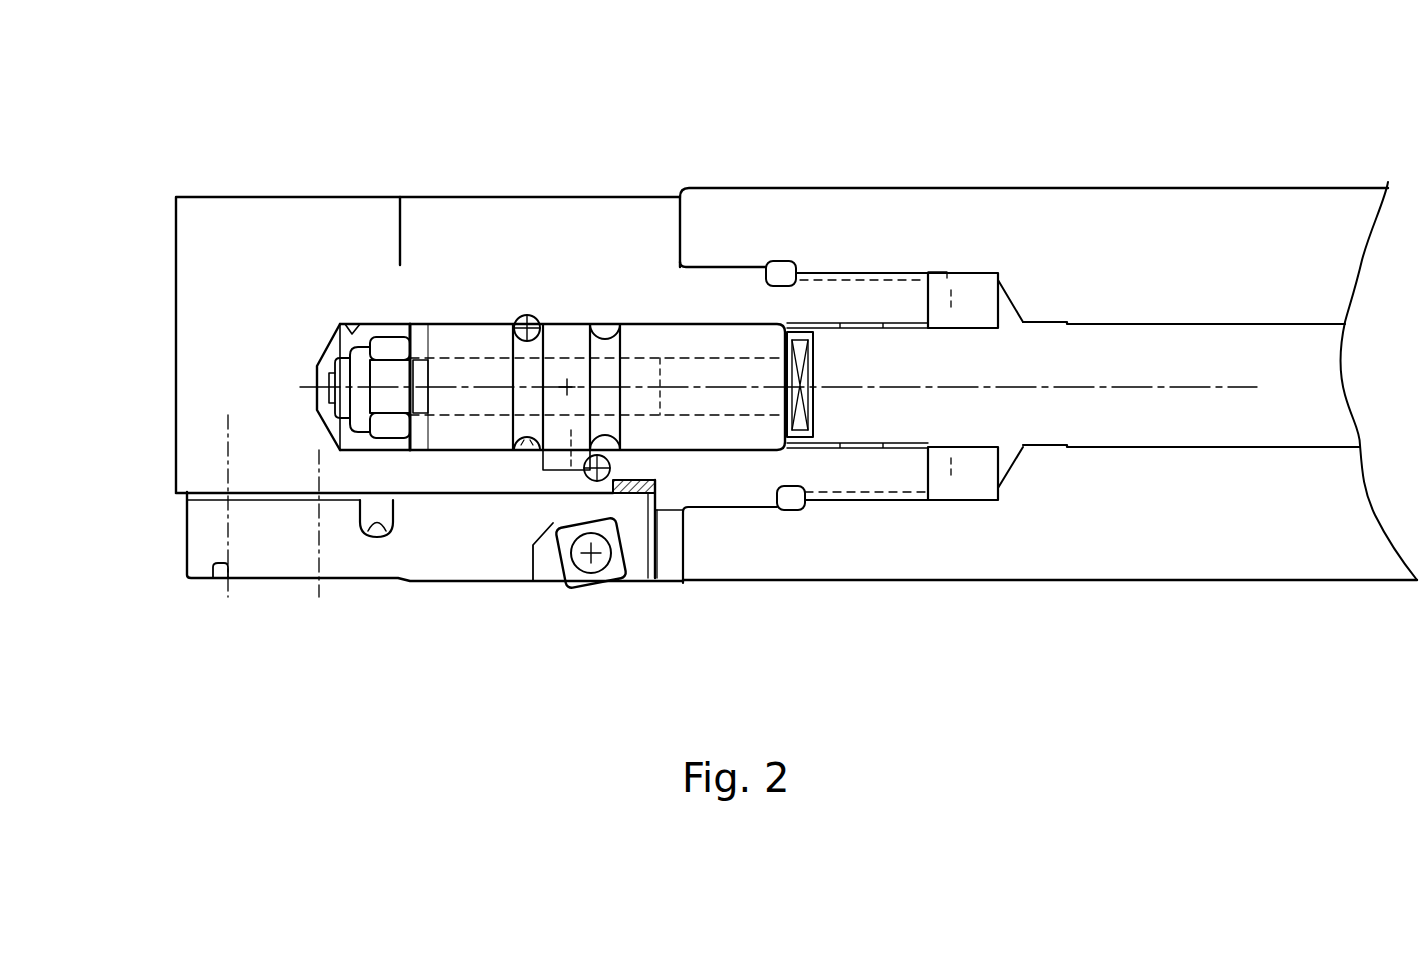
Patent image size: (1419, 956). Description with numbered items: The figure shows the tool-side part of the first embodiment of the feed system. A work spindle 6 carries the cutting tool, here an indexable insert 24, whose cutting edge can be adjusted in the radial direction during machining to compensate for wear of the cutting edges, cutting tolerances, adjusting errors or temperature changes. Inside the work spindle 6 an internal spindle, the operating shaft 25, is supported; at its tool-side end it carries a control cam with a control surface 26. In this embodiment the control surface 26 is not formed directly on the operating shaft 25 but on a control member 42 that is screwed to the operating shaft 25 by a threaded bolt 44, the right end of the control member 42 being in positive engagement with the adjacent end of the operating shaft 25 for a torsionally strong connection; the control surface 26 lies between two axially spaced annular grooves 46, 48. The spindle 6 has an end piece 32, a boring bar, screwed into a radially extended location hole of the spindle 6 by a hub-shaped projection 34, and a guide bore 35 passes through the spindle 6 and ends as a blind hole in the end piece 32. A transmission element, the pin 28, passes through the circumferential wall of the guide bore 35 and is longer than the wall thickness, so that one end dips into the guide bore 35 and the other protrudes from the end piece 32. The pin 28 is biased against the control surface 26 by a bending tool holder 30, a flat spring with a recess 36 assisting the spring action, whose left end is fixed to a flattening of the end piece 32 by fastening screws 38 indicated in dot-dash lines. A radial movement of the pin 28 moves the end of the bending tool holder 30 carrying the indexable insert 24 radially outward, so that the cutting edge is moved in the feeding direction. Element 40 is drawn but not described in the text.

The work spindle 6 is at (876, 202).
The indexable insert 24 is at (617, 574).
The operating shaft 25 is at (1122, 433).
The control surface 26 is at (586, 325).
The pin 28 is at (557, 473).
The bending tool holder 30 is at (400, 602).
The end piece 32 is at (202, 213).
The hub-shaped projection 34 is at (662, 213).
The guide bore 35 is at (348, 333).
The recess 36 is at (372, 538).
The fastening screws 38 is at (213, 578).
The clamp wedge 40 is at (633, 497).
The control member 42 is at (473, 445).
The threaded bolt 44 is at (328, 387).
The annular groove 46 is at (605, 326).
The annular groove 48 is at (527, 458).